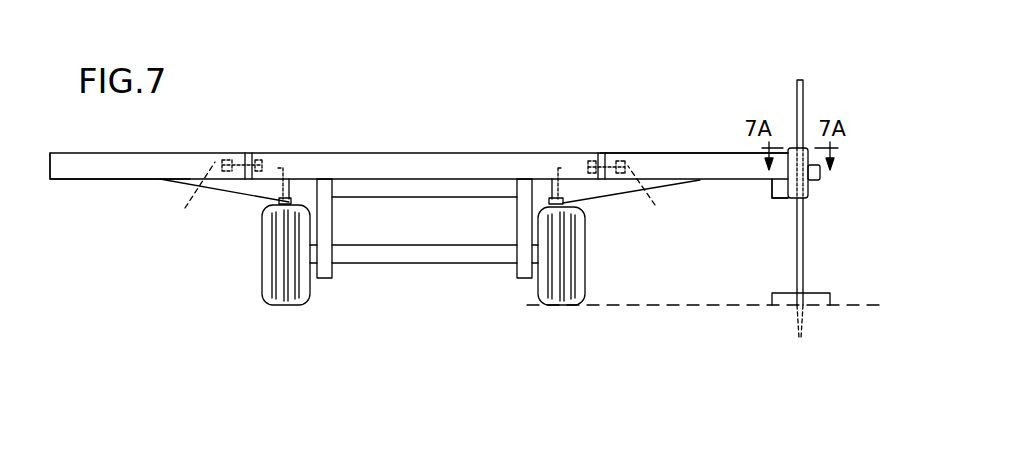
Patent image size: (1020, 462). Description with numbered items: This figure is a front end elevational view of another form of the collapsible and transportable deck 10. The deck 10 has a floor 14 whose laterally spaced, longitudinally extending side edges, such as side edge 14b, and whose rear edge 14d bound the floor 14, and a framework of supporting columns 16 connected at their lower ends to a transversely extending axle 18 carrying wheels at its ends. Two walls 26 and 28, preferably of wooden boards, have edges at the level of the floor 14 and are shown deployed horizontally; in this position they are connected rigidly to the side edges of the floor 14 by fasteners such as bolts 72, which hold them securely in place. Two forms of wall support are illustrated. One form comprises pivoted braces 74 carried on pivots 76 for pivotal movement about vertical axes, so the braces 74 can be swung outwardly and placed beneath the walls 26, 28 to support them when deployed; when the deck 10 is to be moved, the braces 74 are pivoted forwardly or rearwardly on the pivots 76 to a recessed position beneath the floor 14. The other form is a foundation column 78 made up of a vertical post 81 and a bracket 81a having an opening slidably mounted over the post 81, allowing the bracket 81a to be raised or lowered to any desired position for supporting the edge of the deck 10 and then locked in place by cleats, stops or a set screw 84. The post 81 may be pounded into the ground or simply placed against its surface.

The deck 10 is at (378, 140).
The floor 14 is at (472, 153).
The side edge 14b is at (245, 153).
The rear edge 14d is at (604, 153).
The supporting columns 16 is at (513, 215).
The axle 18 is at (385, 265).
The wall 26 is at (667, 153).
The wall 28 is at (193, 153).
The bolts 72 is at (427, 198).
The pivoted braces 74 is at (243, 188).
The pivots 76 is at (287, 170).
The foundation column 78 is at (815, 192).
The vertical post 81 is at (803, 265).
The bracket 81a is at (768, 193).
The set screw 84 is at (821, 176).